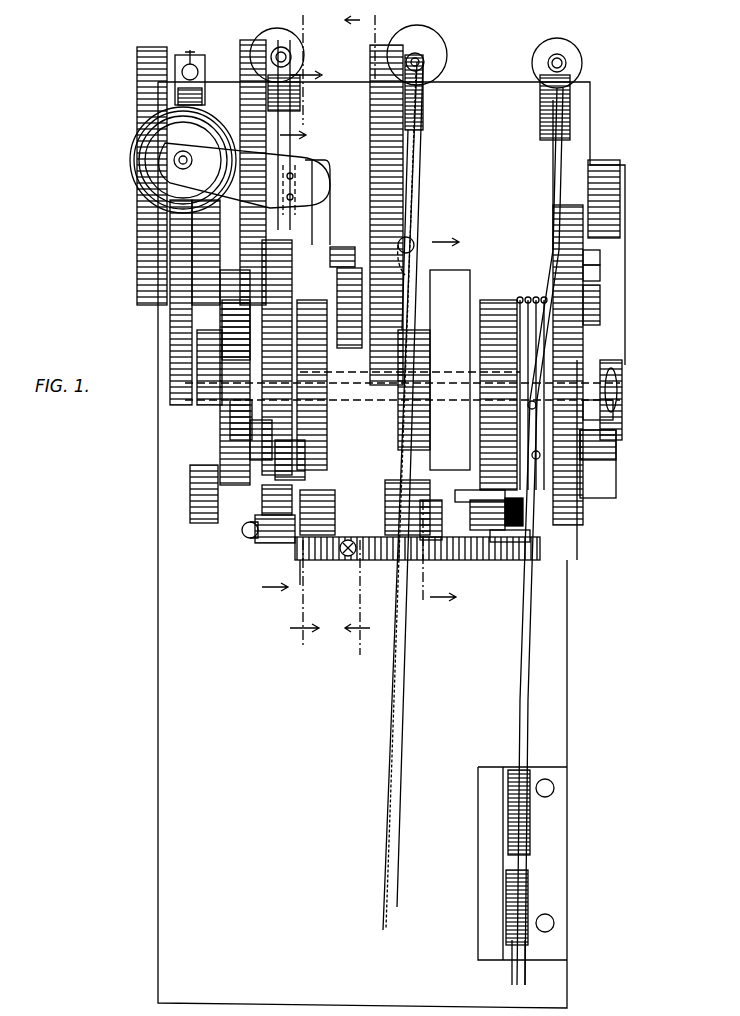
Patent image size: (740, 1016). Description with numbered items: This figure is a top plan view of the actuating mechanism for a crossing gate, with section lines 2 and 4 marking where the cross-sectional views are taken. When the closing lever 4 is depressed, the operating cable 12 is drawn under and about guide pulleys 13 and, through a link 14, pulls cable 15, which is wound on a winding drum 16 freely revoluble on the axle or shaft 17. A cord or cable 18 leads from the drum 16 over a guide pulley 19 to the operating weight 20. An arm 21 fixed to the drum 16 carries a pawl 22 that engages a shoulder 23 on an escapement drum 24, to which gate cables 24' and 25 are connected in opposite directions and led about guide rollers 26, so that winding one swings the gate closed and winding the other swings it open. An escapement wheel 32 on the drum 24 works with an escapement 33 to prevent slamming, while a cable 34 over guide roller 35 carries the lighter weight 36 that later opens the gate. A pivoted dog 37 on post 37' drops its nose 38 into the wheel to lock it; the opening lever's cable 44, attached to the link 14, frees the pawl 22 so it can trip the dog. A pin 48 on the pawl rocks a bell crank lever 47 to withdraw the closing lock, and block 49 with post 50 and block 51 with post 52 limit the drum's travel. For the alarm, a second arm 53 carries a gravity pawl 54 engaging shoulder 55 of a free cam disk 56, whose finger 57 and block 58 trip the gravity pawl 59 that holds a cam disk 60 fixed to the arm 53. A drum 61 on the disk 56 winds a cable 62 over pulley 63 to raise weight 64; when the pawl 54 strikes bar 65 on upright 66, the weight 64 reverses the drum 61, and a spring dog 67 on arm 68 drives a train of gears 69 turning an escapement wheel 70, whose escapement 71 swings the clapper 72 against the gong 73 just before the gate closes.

The section line 2 is at (295, 360).
The closing lever 4 is at (423, 620).
The operating cable 12 is at (387, 708).
The guide pulleys 13 is at (296, 333).
The link 14 is at (398, 332).
The cable 15 is at (345, 556).
The winding drum 16 is at (452, 540).
The axle or shaft 17 is at (610, 372).
The cord or cable 18 is at (415, 210).
The guide pulley 19 is at (425, 70).
The operating weight 20 is at (430, 38).
The arm 21 is at (450, 530).
The pawl 22 is at (500, 590).
The shoulder 23 is at (495, 345).
The escapement drum 24 is at (523, 190).
The cable 24' is at (543, 964).
The cable 25 is at (510, 977).
The guide rollers 26 is at (530, 813).
The escapement wheel 32 is at (568, 505).
The escapement 33 is at (590, 240).
The cable 34 is at (558, 160).
The guide roller 35 is at (572, 85).
The weight 36 is at (574, 58).
The pivoted dog 37 is at (577, 538).
The post or upright 37' is at (527, 564).
The nose 38 is at (540, 528).
The cable 44 is at (395, 790).
The bell crank lever 47 is at (512, 300).
The pin or stud 48 is at (520, 535).
The block 49 is at (600, 258).
The post 50 is at (602, 272).
The block 51 is at (600, 310).
The post 52 is at (612, 480).
The second arm 53 is at (356, 515).
The gravity actuated pawl 54 is at (300, 588).
The shoulder 55 is at (300, 455).
The cam disk 56 is at (240, 365).
The finger 57 is at (338, 250).
The block 58 is at (348, 270).
The gravity pawl 59 is at (412, 240).
The cam disk 60 is at (250, 420).
The drum 61 is at (268, 440).
The cable or rope 62 is at (328, 215).
The guide roller or pulley 63 is at (284, 110).
The operating weight 64 is at (300, 58).
The bar 65 is at (312, 178).
The upright or post 66 is at (305, 160).
The spring actuated dog 67 is at (258, 530).
The arm 68 is at (275, 550).
The train of gears 69 is at (198, 480).
The escapement wheel 70 is at (175, 328).
The escapement 71 is at (193, 56).
The bell clapper or tappet 72 is at (185, 63).
The gong 73 is at (160, 158).